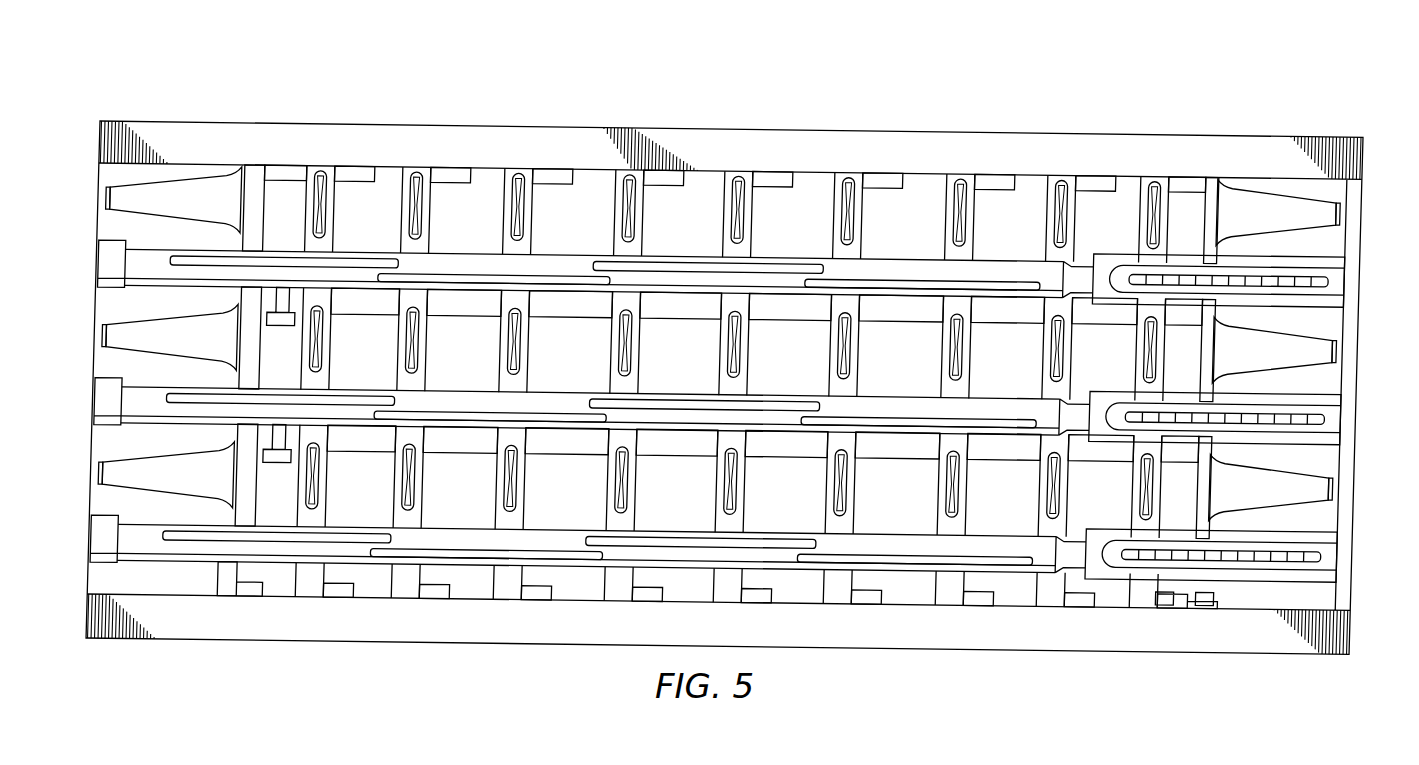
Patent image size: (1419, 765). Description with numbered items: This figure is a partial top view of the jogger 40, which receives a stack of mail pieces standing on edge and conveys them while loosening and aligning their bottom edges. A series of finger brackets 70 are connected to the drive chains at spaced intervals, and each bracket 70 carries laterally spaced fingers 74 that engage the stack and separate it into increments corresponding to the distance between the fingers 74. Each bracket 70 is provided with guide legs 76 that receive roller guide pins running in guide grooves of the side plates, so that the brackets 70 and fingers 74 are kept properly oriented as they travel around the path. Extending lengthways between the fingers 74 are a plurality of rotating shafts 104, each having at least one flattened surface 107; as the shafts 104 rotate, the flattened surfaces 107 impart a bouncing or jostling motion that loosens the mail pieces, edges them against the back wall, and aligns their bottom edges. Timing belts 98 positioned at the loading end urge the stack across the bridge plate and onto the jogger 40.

The jogger 40 is at (673, 108).
The finger bracket 70 is at (299, 190).
The finger 74 is at (327, 203).
The guide leg 76 is at (447, 175).
The timing belt 98 is at (1338, 285).
The rotating shaft 104 is at (998, 268).
The flattened surface 107 is at (473, 282).